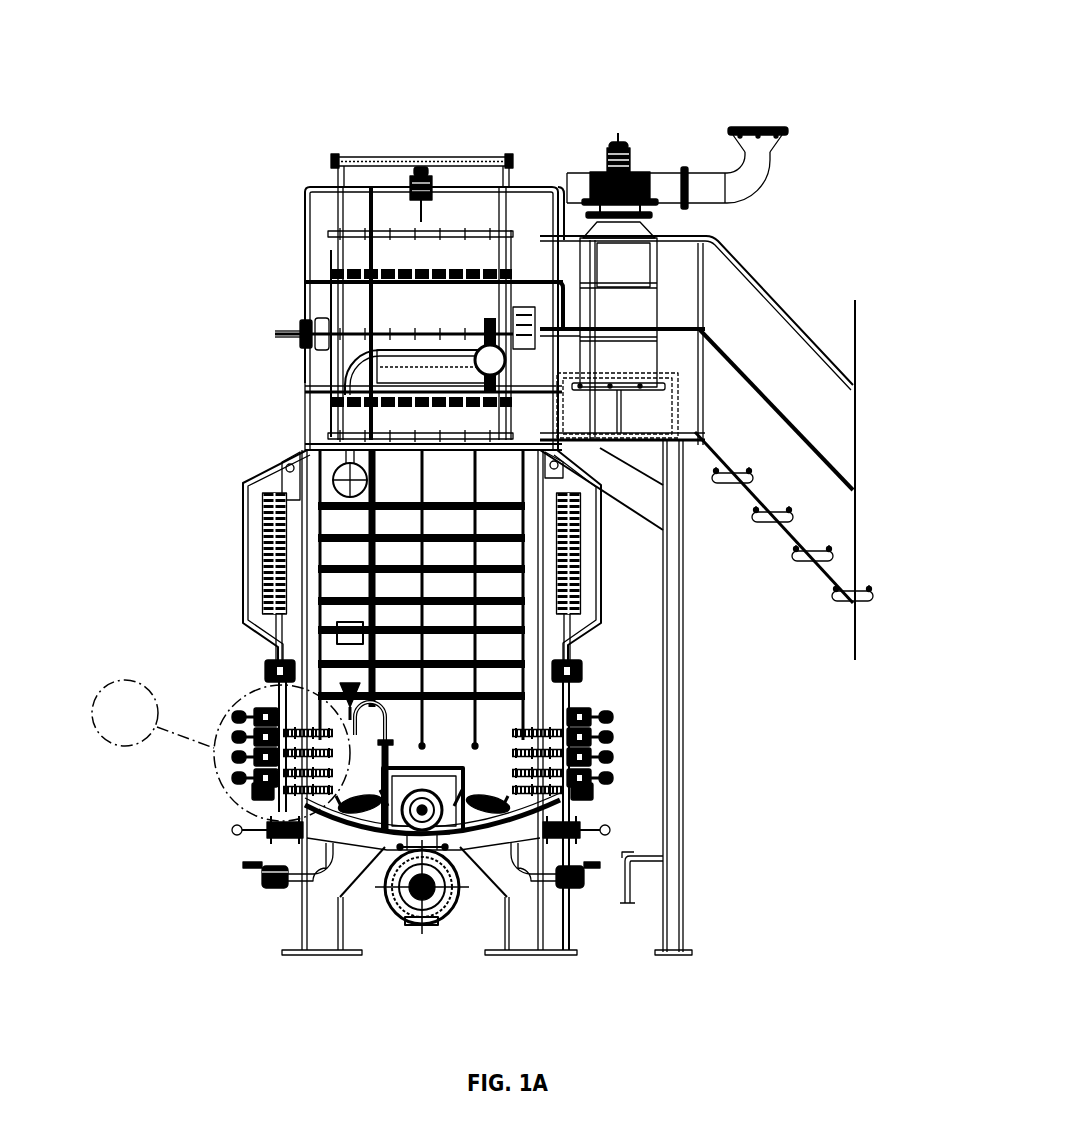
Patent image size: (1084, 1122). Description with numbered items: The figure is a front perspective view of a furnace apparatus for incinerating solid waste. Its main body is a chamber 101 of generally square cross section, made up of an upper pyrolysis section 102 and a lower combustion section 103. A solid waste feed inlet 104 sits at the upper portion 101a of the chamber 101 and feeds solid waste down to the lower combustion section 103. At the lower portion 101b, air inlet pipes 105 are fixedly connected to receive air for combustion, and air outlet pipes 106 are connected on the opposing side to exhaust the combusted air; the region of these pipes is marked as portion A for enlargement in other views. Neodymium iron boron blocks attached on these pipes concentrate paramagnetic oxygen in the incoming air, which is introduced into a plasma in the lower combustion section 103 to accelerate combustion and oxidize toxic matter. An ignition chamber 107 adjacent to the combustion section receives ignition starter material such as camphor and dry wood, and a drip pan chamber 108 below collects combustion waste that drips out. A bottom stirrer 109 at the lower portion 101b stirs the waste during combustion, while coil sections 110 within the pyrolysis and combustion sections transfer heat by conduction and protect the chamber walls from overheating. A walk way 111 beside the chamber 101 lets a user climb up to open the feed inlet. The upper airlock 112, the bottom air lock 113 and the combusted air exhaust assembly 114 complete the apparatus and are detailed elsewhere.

The chamber 101 is at (233, 545).
The upper portion 101a is at (285, 413).
The lower portion 101b is at (233, 815).
The upper pyrolysis section 102 is at (548, 523).
The lower combustion section 103 is at (477, 768).
The solid waste feed inlet 104 is at (373, 157).
The air inlet pipe 105 is at (233, 733).
The air outlet pipe 106 is at (620, 755).
The ignition chamber 107 is at (455, 818).
The drip pan chamber 108 is at (288, 835).
The bottom stirrer 109 is at (445, 845).
The coil sections 110 is at (373, 767).
The walk way 111 is at (793, 315).
The upper airlock 112 is at (317, 318).
The bottom air lock 113 is at (450, 902).
The combusted air exhaust assembly 114 is at (692, 145).